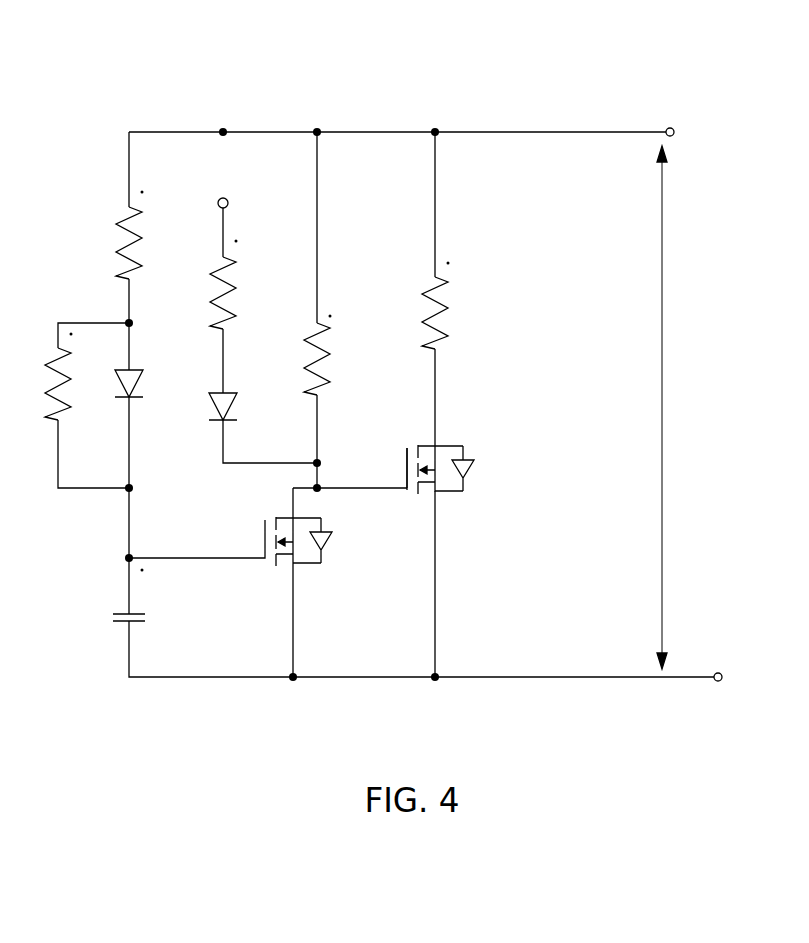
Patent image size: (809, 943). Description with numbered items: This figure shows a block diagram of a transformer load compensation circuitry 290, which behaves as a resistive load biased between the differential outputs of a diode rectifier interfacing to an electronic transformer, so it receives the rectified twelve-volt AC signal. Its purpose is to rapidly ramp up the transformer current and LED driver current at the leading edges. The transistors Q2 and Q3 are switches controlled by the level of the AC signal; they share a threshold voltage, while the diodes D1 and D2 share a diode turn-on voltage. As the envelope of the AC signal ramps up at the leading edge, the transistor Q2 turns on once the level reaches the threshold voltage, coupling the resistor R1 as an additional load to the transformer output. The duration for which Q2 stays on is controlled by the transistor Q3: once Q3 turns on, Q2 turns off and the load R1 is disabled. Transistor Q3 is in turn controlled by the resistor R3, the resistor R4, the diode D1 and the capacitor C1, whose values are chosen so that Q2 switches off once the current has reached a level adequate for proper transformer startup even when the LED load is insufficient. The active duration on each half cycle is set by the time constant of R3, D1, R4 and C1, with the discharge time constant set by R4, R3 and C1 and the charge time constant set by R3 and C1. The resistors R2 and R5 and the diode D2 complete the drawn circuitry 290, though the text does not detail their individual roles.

The transformer load compensation circuitry 290 is at (411, 348).
The resistor R1 is at (449, 306).
The resistor R2 is at (333, 355).
The resistor R3 is at (144, 235).
The resistor R4 is at (87, 405).
The resistor R5 is at (236, 285).
The diode D1 is at (145, 383).
The diode D2 is at (238, 408).
The capacitor C1 is at (143, 598).
The transistor Q2 is at (457, 469).
The transistor Q3 is at (247, 597).